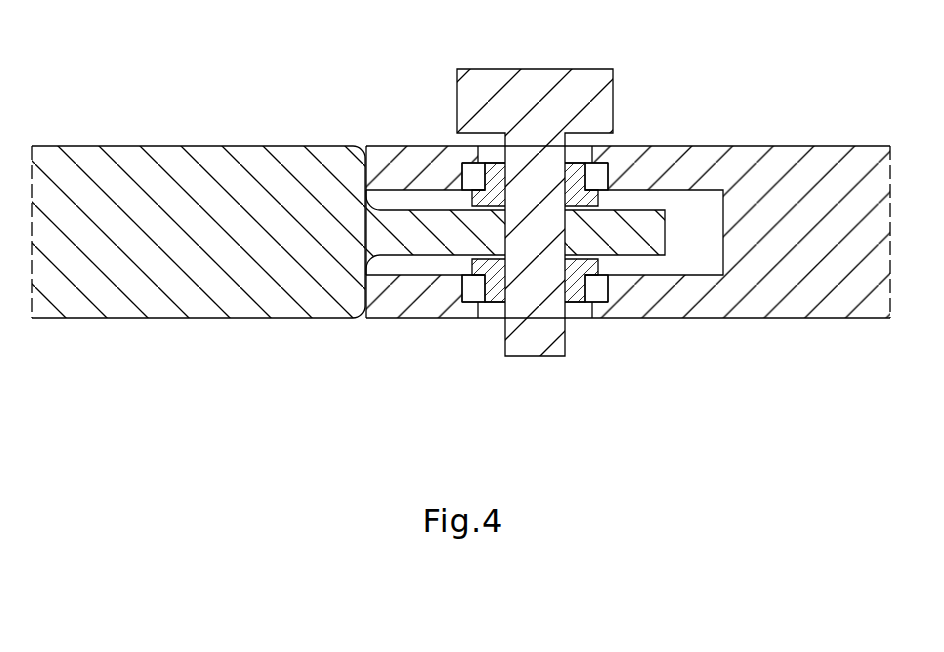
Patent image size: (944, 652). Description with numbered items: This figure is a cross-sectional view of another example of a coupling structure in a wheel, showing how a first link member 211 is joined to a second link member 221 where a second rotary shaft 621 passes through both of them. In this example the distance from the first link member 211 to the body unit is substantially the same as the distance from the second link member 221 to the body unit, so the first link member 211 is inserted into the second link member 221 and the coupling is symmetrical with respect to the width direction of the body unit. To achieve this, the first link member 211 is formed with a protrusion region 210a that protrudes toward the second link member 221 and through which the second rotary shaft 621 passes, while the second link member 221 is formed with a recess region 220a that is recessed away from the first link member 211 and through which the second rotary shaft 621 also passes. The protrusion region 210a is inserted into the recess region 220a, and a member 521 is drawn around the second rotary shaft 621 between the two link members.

The first link member 211 is at (173, 160).
The second link member 221 is at (472, 326).
The second rotary shaft 621 is at (540, 85).
The elastic bushing member 521 is at (588, 202).
The protrusion region 210a is at (430, 232).
The recess region 220a is at (702, 273).